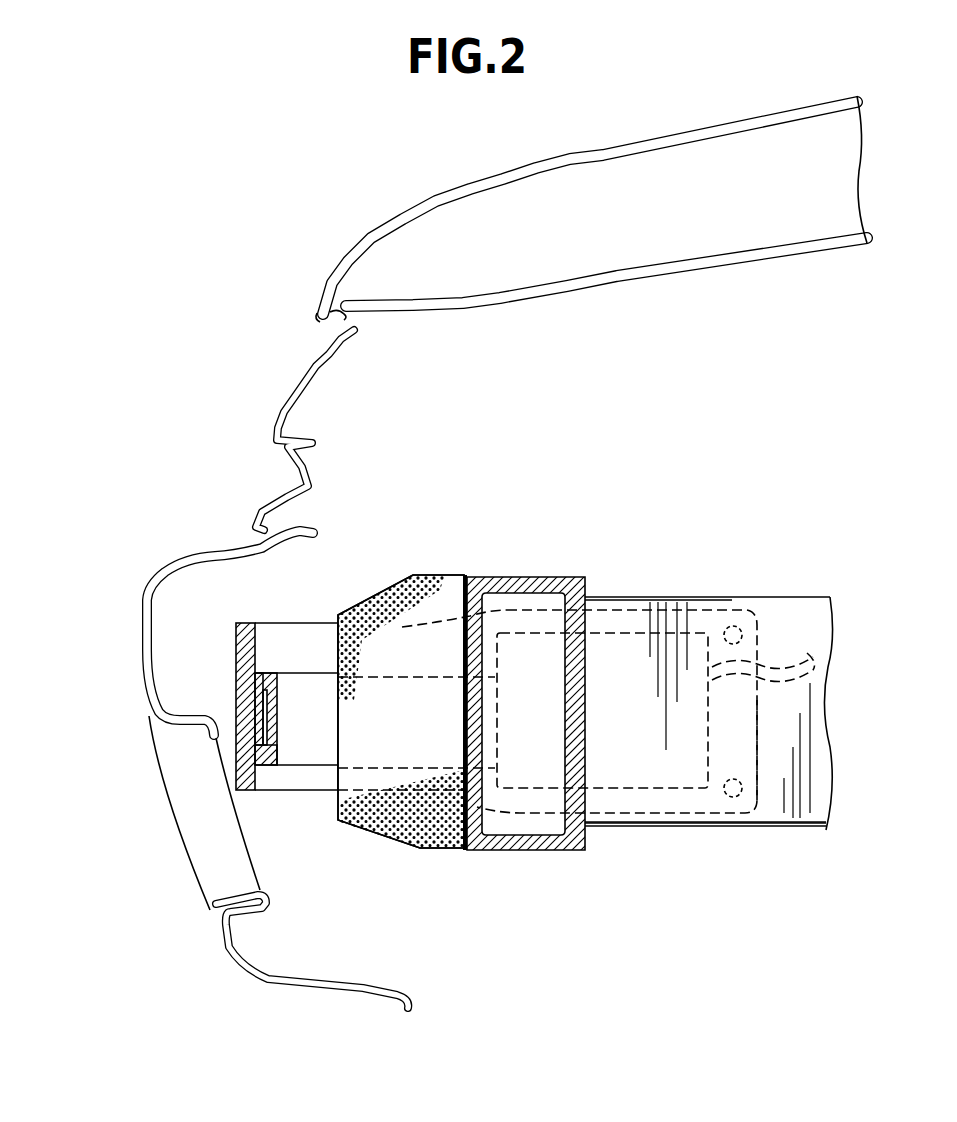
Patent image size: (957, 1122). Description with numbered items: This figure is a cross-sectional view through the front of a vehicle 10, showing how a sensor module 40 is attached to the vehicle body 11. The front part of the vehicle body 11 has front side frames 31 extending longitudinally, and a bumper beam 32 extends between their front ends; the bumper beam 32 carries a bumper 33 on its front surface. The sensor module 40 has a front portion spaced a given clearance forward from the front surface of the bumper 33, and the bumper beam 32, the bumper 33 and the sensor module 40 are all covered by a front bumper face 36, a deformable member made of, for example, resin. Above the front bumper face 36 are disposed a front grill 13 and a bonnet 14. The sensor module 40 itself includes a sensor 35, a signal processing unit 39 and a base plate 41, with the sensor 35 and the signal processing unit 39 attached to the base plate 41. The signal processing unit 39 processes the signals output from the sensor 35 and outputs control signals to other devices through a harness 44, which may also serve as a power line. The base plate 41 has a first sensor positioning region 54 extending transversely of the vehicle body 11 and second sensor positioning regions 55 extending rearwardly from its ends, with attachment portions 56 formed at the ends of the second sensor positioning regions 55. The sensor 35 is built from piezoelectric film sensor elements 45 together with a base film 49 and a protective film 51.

The vehicle 10 is at (185, 104).
The vehicle body 11 is at (755, 826).
The front grill 13 is at (293, 388).
The bonnet 14 is at (622, 147).
The front side frame 31 is at (692, 681).
The bumper beam 32 is at (513, 577).
The bumper 33 is at (422, 639).
The sensor 35 is at (152, 781).
The front bumper face 36 is at (177, 562).
The signal processing unit 39 is at (600, 633).
The sensor module 40 is at (209, 689).
The base plate 41 is at (318, 618).
The harness 44 is at (777, 667).
The piezoelectric film sensor element 45 is at (247, 740).
The base film 49 is at (237, 760).
The protective film 51 is at (243, 727).
The first sensor positioning region 54 is at (247, 623).
The second sensor positioning region 55 is at (402, 627).
The attachment portion 56 is at (757, 752).